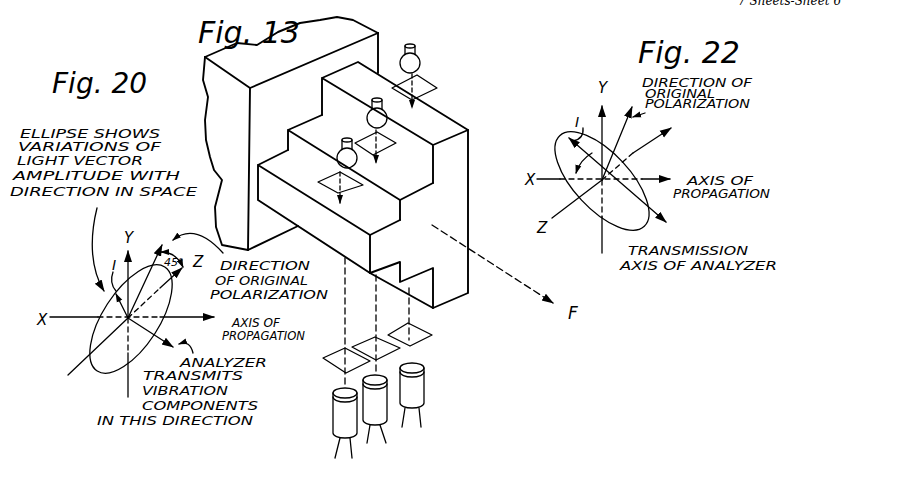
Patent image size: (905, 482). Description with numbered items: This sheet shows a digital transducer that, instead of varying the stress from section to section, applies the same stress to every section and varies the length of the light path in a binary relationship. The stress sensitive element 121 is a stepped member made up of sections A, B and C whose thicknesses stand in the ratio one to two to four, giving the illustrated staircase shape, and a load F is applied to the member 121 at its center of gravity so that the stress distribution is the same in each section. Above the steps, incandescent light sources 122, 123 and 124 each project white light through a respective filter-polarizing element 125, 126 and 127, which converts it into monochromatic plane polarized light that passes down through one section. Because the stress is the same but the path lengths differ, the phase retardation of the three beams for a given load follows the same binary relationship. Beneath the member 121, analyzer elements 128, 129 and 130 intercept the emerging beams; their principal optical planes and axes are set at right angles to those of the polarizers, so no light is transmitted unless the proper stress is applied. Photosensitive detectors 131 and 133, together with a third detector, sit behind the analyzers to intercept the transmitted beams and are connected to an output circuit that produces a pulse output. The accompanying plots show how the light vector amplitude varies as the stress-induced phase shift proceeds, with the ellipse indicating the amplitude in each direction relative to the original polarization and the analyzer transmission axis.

The stress sensitive element 121 is at (465, 187).
The incandescent light source 122 is at (421, 59).
The incandescent light source 123 is at (367, 116).
The incandescent light source 124 is at (337, 148).
The filter-polarizing element 125 is at (437, 88).
The filter-polarizing element 126 is at (387, 147).
The filter-polarizing element 127 is at (354, 190).
The analyzer element 128 is at (427, 335).
The analyzer element 129 is at (370, 342).
The analyzer element 130 is at (331, 362).
The photosensitive detector 131 is at (420, 390).
The photosensitive detector 133 is at (338, 415).